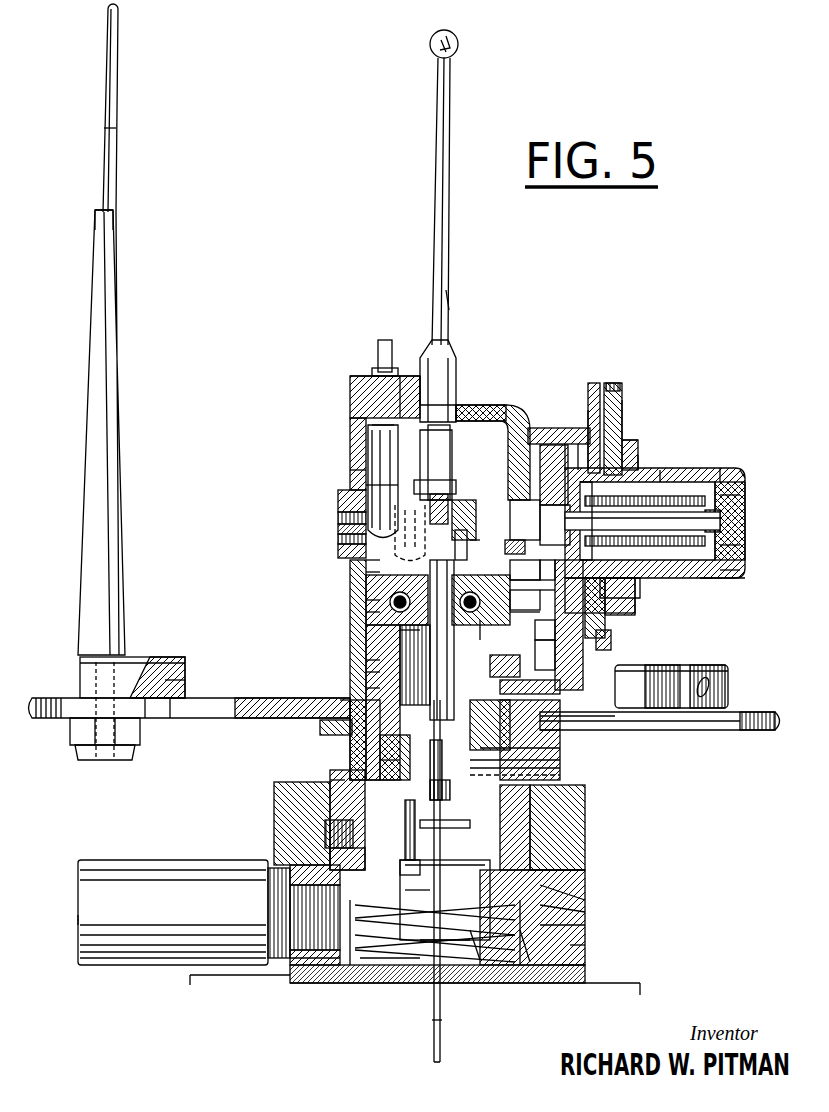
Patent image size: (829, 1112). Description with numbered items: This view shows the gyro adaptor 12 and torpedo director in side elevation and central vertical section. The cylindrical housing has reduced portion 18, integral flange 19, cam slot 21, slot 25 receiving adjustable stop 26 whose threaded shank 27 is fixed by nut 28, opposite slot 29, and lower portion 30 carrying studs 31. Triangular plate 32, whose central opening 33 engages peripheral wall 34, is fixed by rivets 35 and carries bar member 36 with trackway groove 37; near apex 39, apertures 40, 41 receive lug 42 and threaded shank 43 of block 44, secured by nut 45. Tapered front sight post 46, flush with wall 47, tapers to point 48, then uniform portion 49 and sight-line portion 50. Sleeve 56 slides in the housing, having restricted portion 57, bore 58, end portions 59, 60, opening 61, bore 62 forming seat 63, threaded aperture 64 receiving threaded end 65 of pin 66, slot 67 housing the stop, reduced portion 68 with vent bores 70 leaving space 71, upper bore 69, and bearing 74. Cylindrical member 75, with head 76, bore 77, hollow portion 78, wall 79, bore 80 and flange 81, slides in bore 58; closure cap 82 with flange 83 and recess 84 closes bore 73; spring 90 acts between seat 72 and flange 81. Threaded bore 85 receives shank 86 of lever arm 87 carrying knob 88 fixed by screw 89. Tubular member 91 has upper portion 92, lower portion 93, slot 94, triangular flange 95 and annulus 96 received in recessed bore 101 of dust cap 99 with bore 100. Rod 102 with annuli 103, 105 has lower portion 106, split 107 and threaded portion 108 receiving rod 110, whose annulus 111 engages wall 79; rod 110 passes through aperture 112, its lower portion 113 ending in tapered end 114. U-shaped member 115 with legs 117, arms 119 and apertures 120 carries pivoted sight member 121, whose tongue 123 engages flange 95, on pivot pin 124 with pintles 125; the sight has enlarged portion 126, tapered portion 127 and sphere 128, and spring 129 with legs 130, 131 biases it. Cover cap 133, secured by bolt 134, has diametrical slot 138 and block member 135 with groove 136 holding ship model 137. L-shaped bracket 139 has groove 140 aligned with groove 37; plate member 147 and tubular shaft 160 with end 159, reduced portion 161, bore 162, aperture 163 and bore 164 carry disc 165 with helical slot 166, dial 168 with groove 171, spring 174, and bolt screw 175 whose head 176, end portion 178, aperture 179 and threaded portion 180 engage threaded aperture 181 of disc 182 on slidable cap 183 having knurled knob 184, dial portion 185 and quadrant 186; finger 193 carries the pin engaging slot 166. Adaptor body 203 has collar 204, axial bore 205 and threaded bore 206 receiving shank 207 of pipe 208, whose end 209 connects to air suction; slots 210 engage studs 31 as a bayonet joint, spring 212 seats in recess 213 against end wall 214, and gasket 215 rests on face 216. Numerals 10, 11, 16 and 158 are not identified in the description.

The base 10 is at (648, 984).
The wall 11 is at (366, 672).
The adaptor 12 is at (585, 947).
The base plate 16 is at (572, 983).
The reduced portion 18 is at (366, 612).
The integral flange 19 is at (320, 730).
The cam slot 21 is at (512, 660).
The slot 25 is at (368, 572).
The adjustable stop 26 is at (338, 552).
The threaded shank 27 is at (338, 528).
The nut 28 is at (338, 540).
The slot 29 is at (525, 520).
The lower portion 30 is at (527, 774).
The studs 31 is at (352, 860).
The plate 32 is at (248, 718).
The central opening 33 is at (545, 730).
The peripheral wall 34 is at (558, 712).
The screws or rivets 35 is at (340, 702).
The bar member 36 is at (583, 664).
The trackway groove 37 is at (555, 620).
The apex 39 is at (32, 718).
The aperture 40 is at (92, 700).
The aperture 41 is at (170, 700).
The lug 42 is at (185, 678).
The screw threaded shank 43 is at (110, 760).
The block 44 is at (160, 663).
The nut 45 is at (75, 742).
The tapered front sight post 46 is at (92, 462).
The wall 47 is at (85, 668).
The point 48 is at (115, 212).
The reduced uniform-diameter portion 49 is at (116, 130).
The portion 50 is at (123, 61).
The sleeve 56 is at (380, 745).
The restricted portion 57 is at (380, 700).
The bore 58 is at (400, 648).
The enlarged end portion 59 is at (366, 630).
The enlarged end portion 60 is at (585, 885).
The opening 61 is at (520, 745).
The bore 62 is at (400, 632).
The seat 63 is at (479, 631).
The threaded aperture 64 is at (525, 569).
The threaded end 65 is at (471, 545).
The pin 66 is at (555, 525).
The slot 67 is at (380, 580).
The reduced portion 68 is at (520, 632).
The upper bore 69 is at (515, 548).
The vent bores 70 is at (380, 598).
The space 71 is at (512, 612).
The seat 72 is at (585, 800).
The bore 73 is at (450, 912).
The bearing 74 is at (525, 600).
The cylindrical member 75 is at (380, 760).
The head 76 is at (366, 660).
The bore 77 is at (454, 640).
The hollow portion 78 is at (462, 722).
The wall 79 is at (445, 816).
The bore 80 is at (445, 900).
The flange 81 is at (585, 925).
The closure cap 82 is at (470, 920).
The flange 83 is at (476, 960).
The recess 84 is at (418, 912).
The threaded bore 85 is at (500, 666).
The threaded shank 86 is at (500, 688).
The lever arm 87 is at (600, 712).
The knob 88 is at (665, 672).
The screw 89 is at (708, 680).
The spring 90 is at (585, 833).
The tubular member 91 is at (350, 643).
The upper portion 92 is at (368, 560).
The lower portion 93 is at (444, 769).
The slot 94 is at (450, 500).
The triangular shaped flange 95 is at (428, 482).
The annulus 96 is at (366, 600).
The retaining dust cap 99 is at (468, 549).
The bore 100 is at (406, 533).
The recessed bore 101 is at (526, 584).
The rod 102 is at (330, 775).
The annulus 103 is at (366, 688).
The annulus 105 is at (453, 789).
The lower portion 106 is at (560, 748).
The split 107 is at (532, 759).
The internal threaded portion 108 is at (580, 768).
The rod 110 is at (421, 883).
The annulus 111 is at (427, 830).
The aperture 112 is at (405, 930).
The lower portion 113 is at (440, 1025).
The end 114 is at (434, 1060).
The U-shaped member 115 is at (368, 440).
The legs 117 is at (350, 452).
The arms 119 is at (372, 425).
The aperture 120 is at (338, 498).
The pivoted sight member 121 is at (459, 304).
The tongue 123 is at (340, 514).
The pivot pin 124 is at (350, 468).
The reduced pintles 125 is at (366, 485).
The enlarged portion 126 is at (456, 372).
The tapered portion 127 is at (436, 198).
The sphere 128 is at (458, 38).
The spring 129 is at (452, 460).
The leg 130 is at (515, 406).
The leg 131 is at (478, 513).
The cover cap 133 is at (552, 428).
The bolt 134 is at (528, 415).
The block member 135 is at (352, 395).
The groove 136 is at (350, 377).
The ship model 137 is at (378, 348).
The diametrical slot 138 is at (462, 405).
The L-shaped bracket 139 is at (566, 444).
The track-way groove 140 is at (579, 444).
The plate member 147 is at (614, 383).
The step 158 is at (638, 445).
The end 159 is at (640, 462).
The tubular shaft member 160 is at (680, 470).
The reduced portion 161 is at (674, 466).
The bore 162 is at (606, 620).
The aperture 163 is at (744, 470).
The bore 164 is at (650, 578).
The disc 165 is at (596, 383).
The helical slot 166 is at (610, 420).
The dial 168 is at (624, 400).
The circumferential groove 171 is at (616, 385).
The spring 174 is at (690, 578).
The bolt screw 175 is at (642, 521).
The head 176 is at (592, 521).
The end portions 178 is at (745, 500).
The aperture 179 is at (720, 578).
The threaded portion 180 is at (722, 518).
The threaded aperture 181 is at (745, 545).
The disc 182 is at (745, 570).
The slidable cap 183 is at (745, 485).
The knurled knob 184 is at (722, 470).
The semi-circular dial portion 185 is at (630, 440).
The quadrant portion 186 is at (636, 605).
The finger 193 is at (586, 410).
The cylindrical body 203 is at (585, 965).
The annular collar 204 is at (330, 778).
The axial bore 205 is at (585, 900).
The threaded bore 206 is at (312, 965).
The male threaded shank 207 is at (280, 965).
The pipe 208 is at (140, 965).
The opposite end 209 is at (72, 928).
The slots 210 is at (325, 832).
The spring 212 is at (528, 965).
The recess 213 is at (330, 965).
The end wall 214 is at (585, 912).
The sponge rubber gasket 215 is at (274, 802).
The face 216 is at (585, 875).